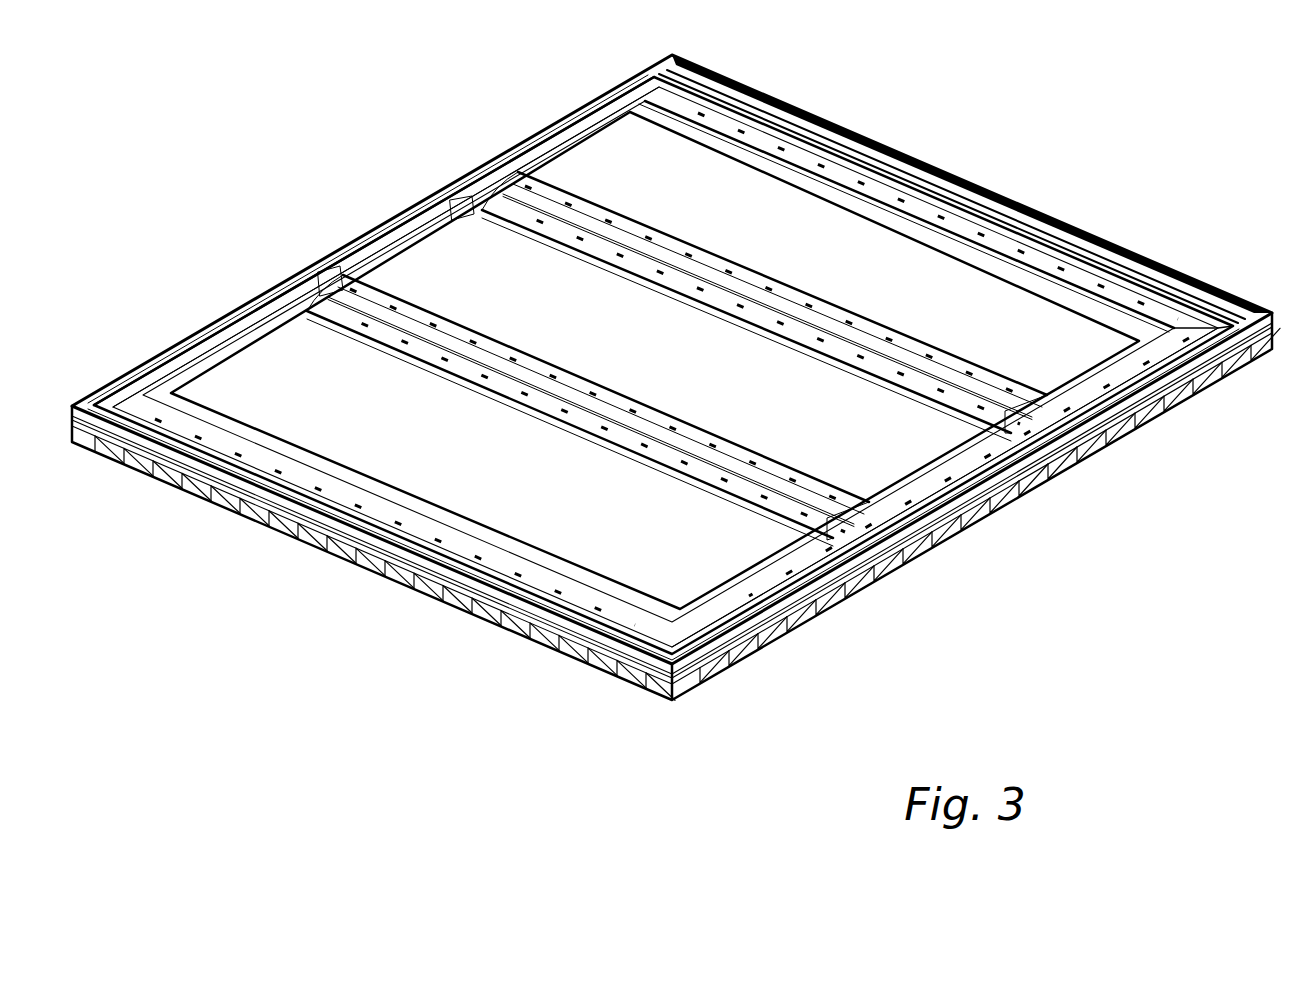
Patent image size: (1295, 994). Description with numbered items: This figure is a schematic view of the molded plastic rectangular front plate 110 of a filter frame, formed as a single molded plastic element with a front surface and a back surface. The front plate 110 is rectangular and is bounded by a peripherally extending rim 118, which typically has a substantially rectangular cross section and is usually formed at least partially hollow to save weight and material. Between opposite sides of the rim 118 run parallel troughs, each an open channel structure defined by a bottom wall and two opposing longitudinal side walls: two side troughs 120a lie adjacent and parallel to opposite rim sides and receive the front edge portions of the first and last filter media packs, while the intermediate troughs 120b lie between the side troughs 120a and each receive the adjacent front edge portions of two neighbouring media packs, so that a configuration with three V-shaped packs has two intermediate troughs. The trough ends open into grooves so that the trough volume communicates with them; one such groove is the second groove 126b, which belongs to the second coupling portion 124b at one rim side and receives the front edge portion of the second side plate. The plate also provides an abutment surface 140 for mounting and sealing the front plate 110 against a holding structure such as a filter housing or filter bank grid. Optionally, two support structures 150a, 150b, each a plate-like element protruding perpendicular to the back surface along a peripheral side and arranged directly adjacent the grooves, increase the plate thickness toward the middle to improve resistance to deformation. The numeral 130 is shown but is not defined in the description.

The front plate 110 is at (206, 582).
The rim 118 is at (458, 620).
The side troughs 120a is at (1172, 360).
The intermediate troughs 120b is at (1000, 470).
The second coupling portion 124b is at (420, 200).
The second groove 126b is at (478, 185).
The panel opening 130 is at (716, 170).
The abutment surface 140 is at (1222, 300).
The support structure 150a is at (1110, 385).
The support structure 150b is at (553, 148).